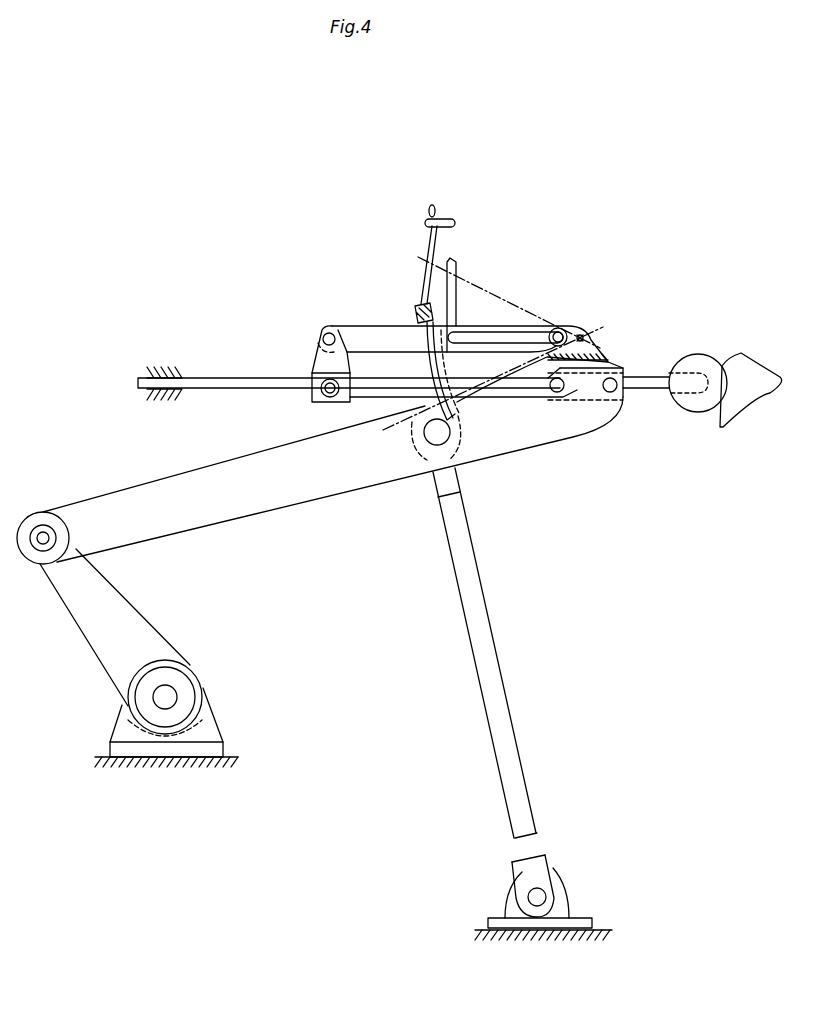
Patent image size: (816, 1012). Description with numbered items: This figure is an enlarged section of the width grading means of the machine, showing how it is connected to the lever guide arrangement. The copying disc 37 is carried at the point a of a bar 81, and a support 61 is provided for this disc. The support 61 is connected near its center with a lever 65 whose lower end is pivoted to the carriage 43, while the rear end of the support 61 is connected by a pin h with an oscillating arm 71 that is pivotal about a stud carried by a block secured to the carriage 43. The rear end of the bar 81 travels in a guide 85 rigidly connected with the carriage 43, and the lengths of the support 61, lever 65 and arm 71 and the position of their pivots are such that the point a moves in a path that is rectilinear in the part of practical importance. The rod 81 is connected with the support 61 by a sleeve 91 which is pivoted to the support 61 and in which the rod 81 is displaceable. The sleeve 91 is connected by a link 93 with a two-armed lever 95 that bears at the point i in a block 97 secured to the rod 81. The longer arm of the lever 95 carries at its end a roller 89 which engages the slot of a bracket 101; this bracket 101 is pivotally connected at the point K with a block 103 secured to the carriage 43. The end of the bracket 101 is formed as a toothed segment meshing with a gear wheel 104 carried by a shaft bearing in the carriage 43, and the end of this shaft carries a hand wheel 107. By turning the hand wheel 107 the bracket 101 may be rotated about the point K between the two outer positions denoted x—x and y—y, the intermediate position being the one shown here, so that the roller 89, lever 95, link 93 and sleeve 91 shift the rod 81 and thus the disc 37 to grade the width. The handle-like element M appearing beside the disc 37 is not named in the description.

The copying disc 37 is at (700, 360).
The carriage 43 is at (193, 765).
The support 61 is at (333, 459).
The lever 65 is at (478, 652).
The oscillating arm 71 is at (121, 642).
The bar 81 is at (264, 385).
The guide 85 is at (150, 378).
The roller 89 is at (560, 329).
The sleeve 91 is at (603, 370).
The link 93 is at (390, 387).
The two-armed lever 95 is at (358, 340).
The block 97 is at (320, 390).
The bracket 101 is at (460, 323).
The block 103 is at (592, 343).
The gear wheel 104 is at (418, 318).
The hand wheel 107 is at (453, 223).
The pin h is at (42, 536).
The bearing point i is at (326, 334).
The pivot point K is at (583, 334).
The point a is at (612, 390).
The handle M is at (757, 387).
The outer position x— x is at (493, 373).
The outer position y— y is at (507, 298).